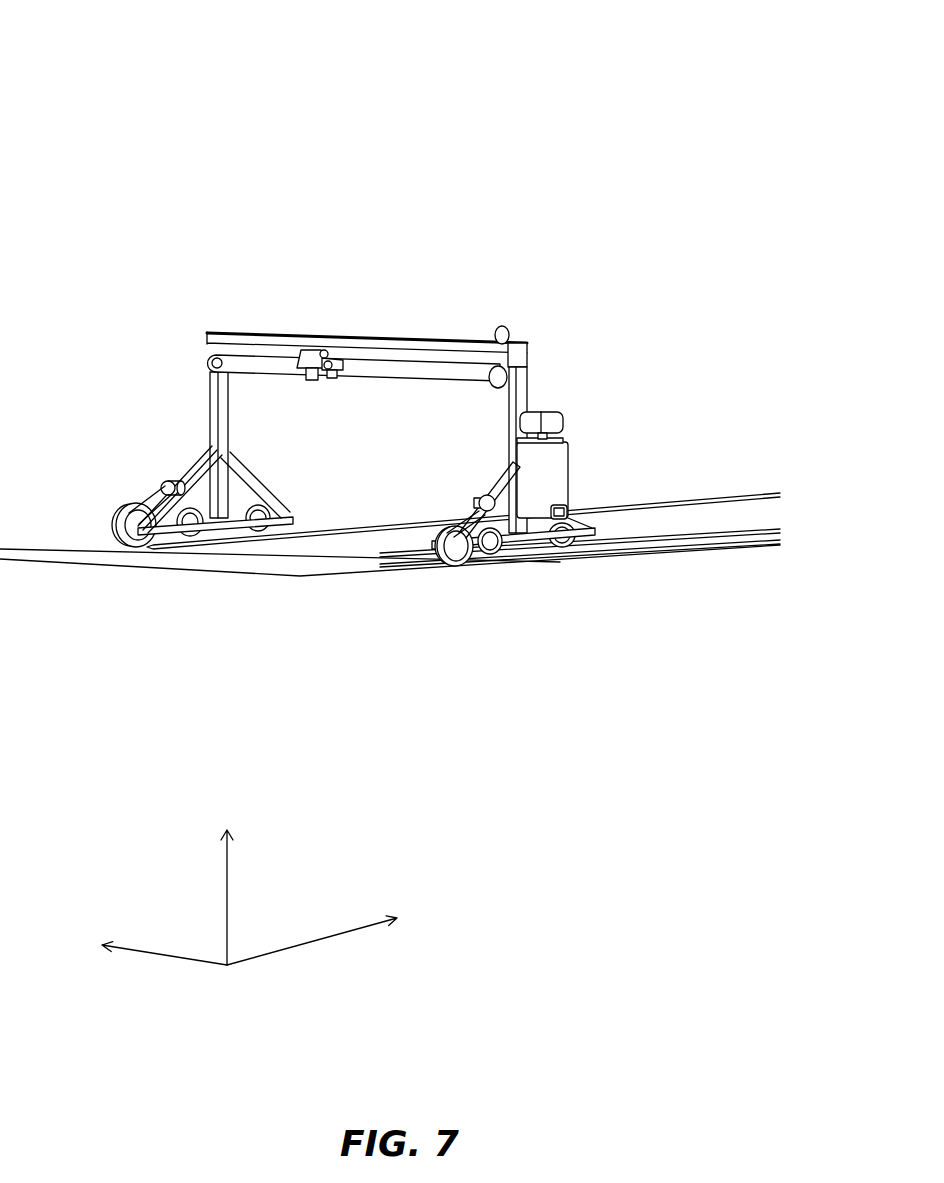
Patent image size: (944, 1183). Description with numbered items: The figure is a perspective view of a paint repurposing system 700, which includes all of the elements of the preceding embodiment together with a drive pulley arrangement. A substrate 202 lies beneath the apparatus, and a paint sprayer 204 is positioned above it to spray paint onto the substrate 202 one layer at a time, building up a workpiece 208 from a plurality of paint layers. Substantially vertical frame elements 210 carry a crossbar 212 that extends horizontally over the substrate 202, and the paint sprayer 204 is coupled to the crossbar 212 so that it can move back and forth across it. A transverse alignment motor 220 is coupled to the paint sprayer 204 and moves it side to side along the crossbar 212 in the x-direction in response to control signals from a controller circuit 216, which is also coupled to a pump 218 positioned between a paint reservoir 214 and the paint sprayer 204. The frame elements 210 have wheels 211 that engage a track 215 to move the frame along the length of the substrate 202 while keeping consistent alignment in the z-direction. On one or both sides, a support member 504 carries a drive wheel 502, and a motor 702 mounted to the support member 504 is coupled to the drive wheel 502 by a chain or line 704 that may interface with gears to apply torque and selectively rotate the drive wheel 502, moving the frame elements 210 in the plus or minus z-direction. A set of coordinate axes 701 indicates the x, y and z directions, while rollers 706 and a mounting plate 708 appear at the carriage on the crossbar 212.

The paint repurposing system 700 is at (94, 40).
The substrate 202 is at (274, 565).
The paint sprayer 204 is at (298, 352).
The workpiece 208 is at (404, 522).
The frame elements 210 is at (210, 415).
The wheels 211 is at (497, 550).
The crossbar 212 is at (404, 342).
The paint reservoir 214 is at (551, 489).
The track 215 is at (668, 538).
The controller circuit 216 is at (555, 412).
The pump 218 is at (557, 437).
The transverse alignment motor 220 is at (318, 350).
The drive wheel 502 is at (123, 522).
The support member 504 is at (194, 471).
The coordinate axes 701 is at (192, 962).
The motor 702 is at (248, 474).
The chain or line 704 is at (506, 326).
The roller 706 is at (494, 389).
The mounting plate 708 is at (341, 381).